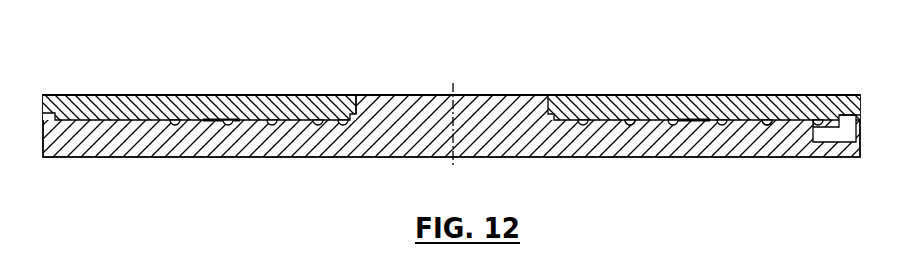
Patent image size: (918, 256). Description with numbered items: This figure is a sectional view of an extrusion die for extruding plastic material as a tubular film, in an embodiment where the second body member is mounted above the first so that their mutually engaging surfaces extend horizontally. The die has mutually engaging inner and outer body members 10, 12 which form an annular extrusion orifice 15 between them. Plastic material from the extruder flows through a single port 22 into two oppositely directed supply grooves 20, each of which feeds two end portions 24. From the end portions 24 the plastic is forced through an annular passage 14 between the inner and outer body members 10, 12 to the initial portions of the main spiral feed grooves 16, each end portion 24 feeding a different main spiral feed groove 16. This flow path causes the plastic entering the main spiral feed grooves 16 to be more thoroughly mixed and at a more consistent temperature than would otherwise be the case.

The inner body member 10 is at (561, 145).
The outer body member 12 is at (672, 113).
The annular passage 14 is at (202, 117).
The annular extrusion orifice 15 is at (357, 96).
The main spiral feed groove 16 is at (654, 110).
The supply groove 20 is at (820, 112).
The port 22 is at (838, 148).
The end portion 24 is at (769, 118).